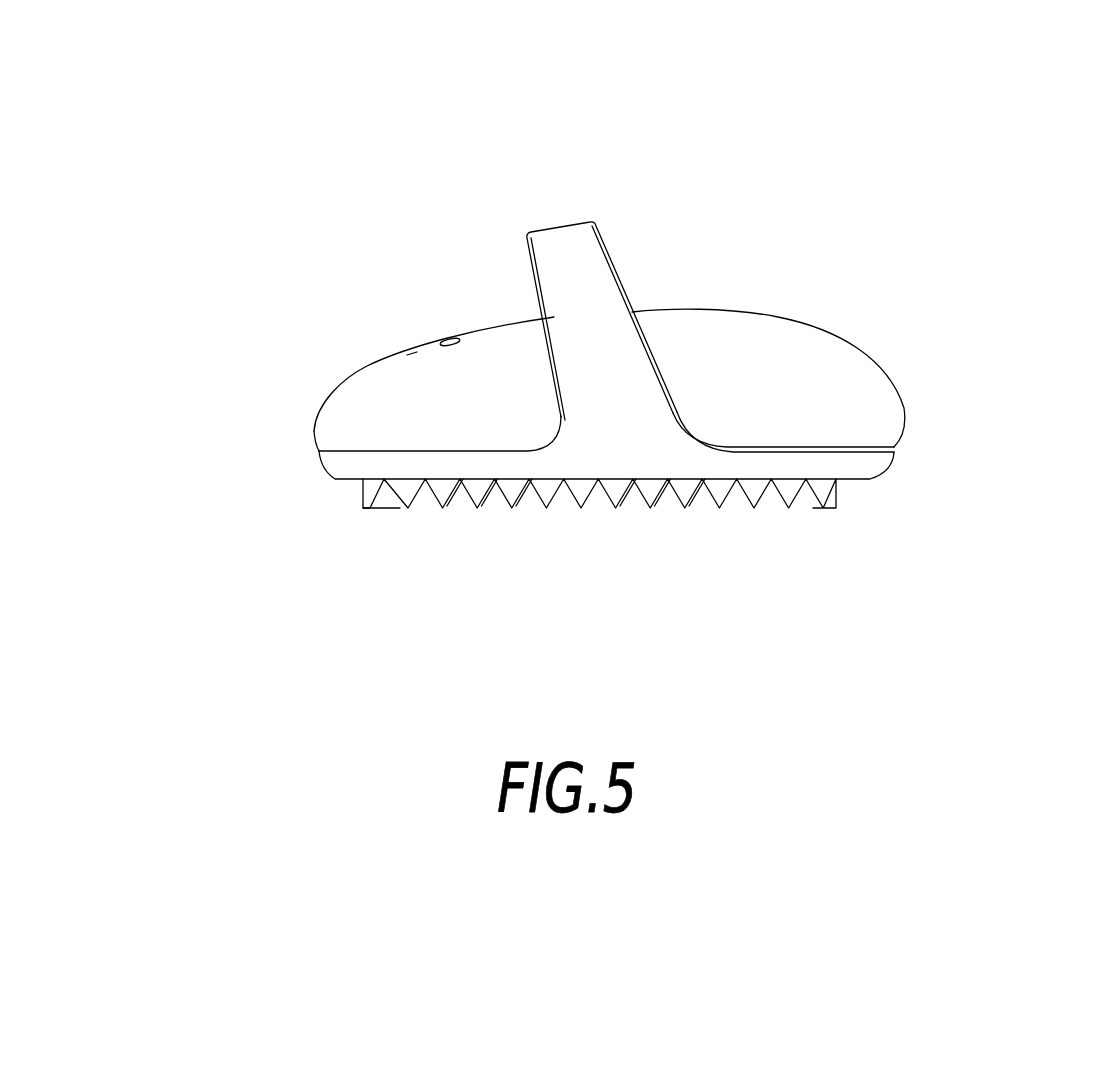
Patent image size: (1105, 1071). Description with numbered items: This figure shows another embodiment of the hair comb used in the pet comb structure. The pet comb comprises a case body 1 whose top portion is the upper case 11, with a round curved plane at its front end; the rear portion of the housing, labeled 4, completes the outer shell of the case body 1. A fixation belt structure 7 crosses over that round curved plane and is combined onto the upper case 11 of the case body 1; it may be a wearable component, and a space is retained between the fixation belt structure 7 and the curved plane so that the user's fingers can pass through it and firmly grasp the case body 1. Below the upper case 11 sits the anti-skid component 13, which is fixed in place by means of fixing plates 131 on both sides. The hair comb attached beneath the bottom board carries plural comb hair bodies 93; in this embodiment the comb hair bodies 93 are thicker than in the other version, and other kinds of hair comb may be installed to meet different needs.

The case body 1 is at (247, 464).
The housing 4 is at (828, 323).
The fixation belt structure 7 is at (555, 211).
The upper case 11 is at (360, 361).
The anti-skid component 13 is at (440, 457).
The fixing plates 131 is at (635, 422).
The comb hair bodies 93 is at (832, 491).